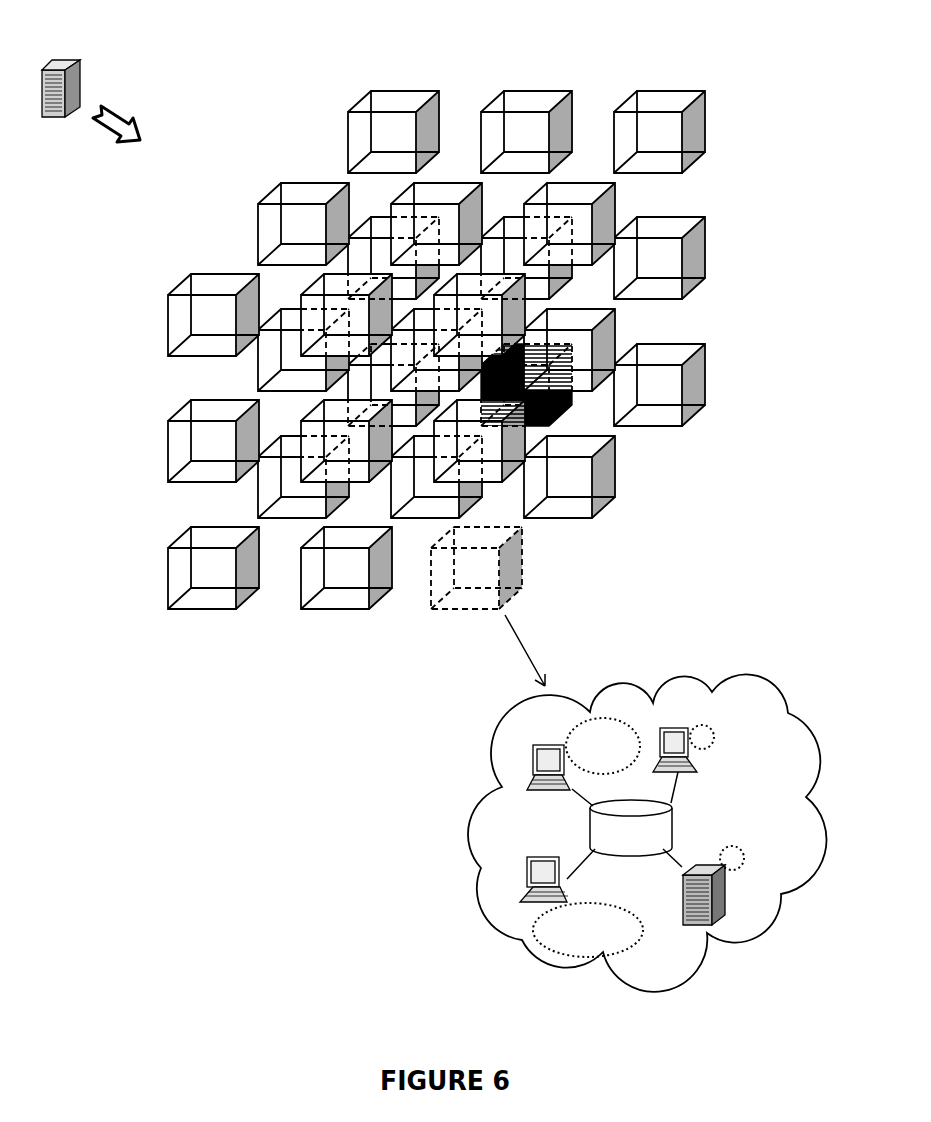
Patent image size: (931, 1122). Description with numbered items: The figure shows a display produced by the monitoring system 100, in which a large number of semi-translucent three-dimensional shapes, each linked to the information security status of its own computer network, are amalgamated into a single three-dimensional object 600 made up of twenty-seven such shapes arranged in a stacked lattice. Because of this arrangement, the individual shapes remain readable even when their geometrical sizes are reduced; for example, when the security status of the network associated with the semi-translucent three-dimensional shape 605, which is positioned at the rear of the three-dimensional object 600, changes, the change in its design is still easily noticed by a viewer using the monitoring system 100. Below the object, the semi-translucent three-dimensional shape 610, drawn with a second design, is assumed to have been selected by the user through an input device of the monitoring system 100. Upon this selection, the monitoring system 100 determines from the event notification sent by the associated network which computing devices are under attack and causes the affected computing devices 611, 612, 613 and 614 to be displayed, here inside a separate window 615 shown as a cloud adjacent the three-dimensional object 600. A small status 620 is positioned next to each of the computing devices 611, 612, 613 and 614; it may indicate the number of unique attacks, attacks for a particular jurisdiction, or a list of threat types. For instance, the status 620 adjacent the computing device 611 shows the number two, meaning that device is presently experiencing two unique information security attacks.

The monitoring system 100 is at (61, 106).
The three-dimensional object 600 is at (499, 371).
The semi-translucent three-dimensional shape 605 is at (573, 404).
The semi-translucent three-dimensional shape 610 is at (462, 612).
The computing device 611 is at (665, 730).
The computing device 612 is at (540, 770).
The computing device 613 is at (522, 862).
The computing device 614 is at (725, 908).
The window 615 is at (780, 802).
The status 620 is at (603, 718).